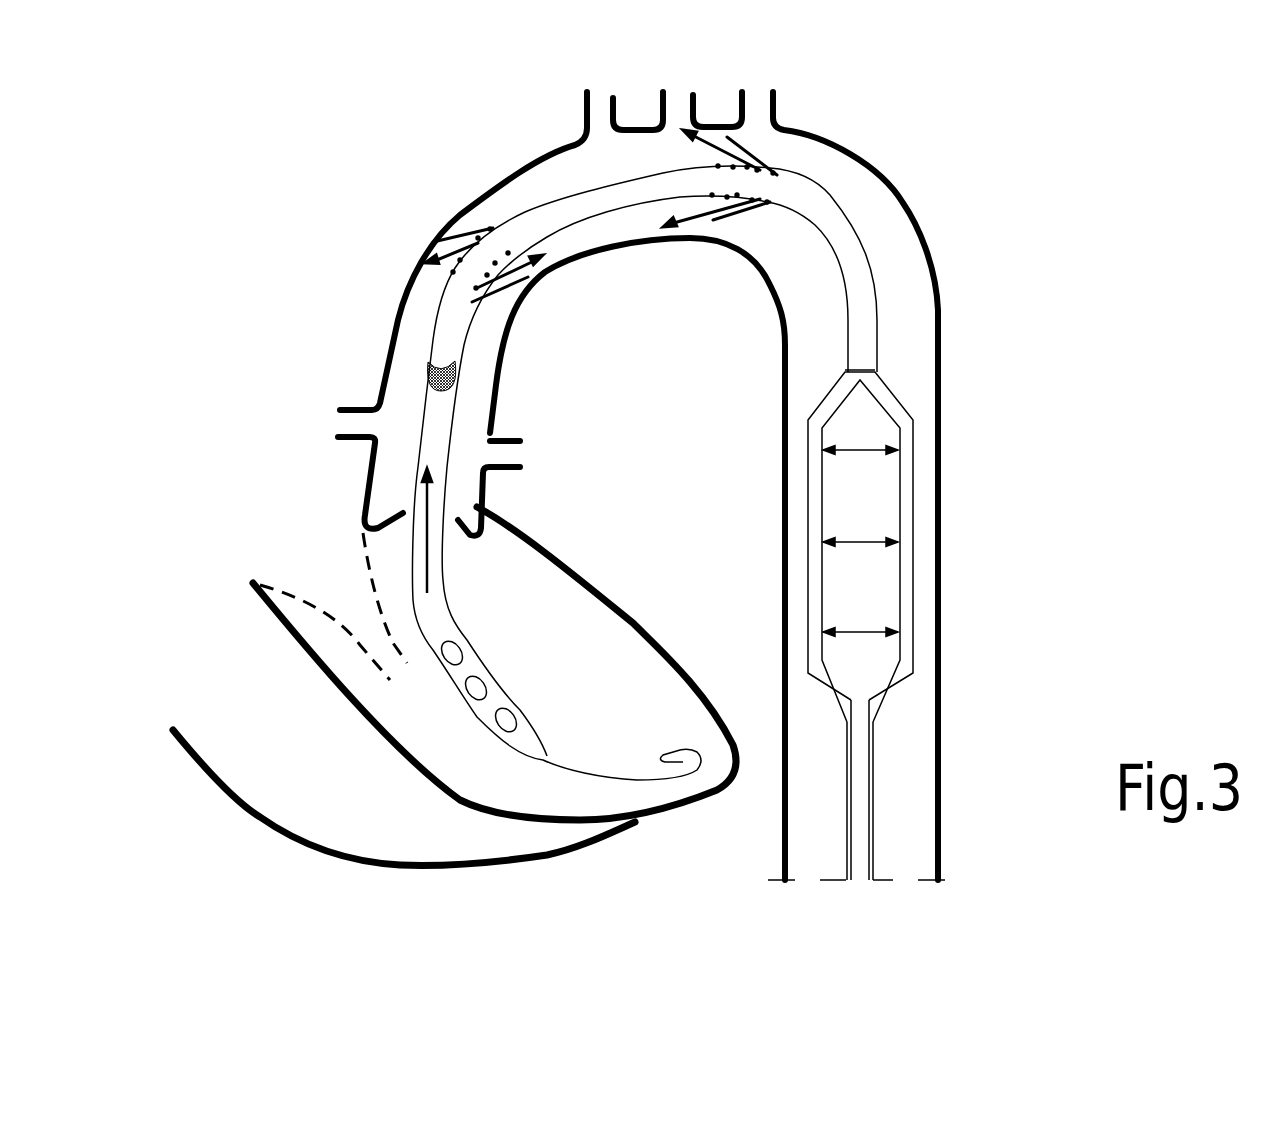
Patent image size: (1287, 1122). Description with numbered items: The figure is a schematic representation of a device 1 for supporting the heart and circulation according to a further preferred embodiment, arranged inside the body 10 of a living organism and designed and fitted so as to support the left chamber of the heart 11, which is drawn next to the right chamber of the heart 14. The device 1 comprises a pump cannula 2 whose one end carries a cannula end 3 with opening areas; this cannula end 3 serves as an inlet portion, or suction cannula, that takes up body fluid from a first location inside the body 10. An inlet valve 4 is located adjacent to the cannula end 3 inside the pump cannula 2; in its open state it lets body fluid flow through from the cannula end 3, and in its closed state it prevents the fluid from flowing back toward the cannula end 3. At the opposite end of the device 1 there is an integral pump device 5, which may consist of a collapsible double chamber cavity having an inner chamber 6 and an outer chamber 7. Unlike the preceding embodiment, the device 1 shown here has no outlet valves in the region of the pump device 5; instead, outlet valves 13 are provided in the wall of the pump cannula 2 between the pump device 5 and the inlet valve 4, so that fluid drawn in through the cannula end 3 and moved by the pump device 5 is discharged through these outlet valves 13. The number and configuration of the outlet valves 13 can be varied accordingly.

The device 1 is at (882, 226).
The pump cannula 2 is at (556, 192).
The cannula end with inlet aperture 3 is at (480, 717).
The inlet valve 4 is at (430, 377).
The pump device 5 is at (920, 587).
The inner chamber 6 is at (878, 487).
The outer chamber 7 is at (905, 527).
The body 10 is at (682, 460).
The left chamber of the heart/left ventricle 11 is at (553, 640).
The outlet valve 13 is at (453, 237).
The right chamber of the heart/right ventricle 14 is at (293, 773).